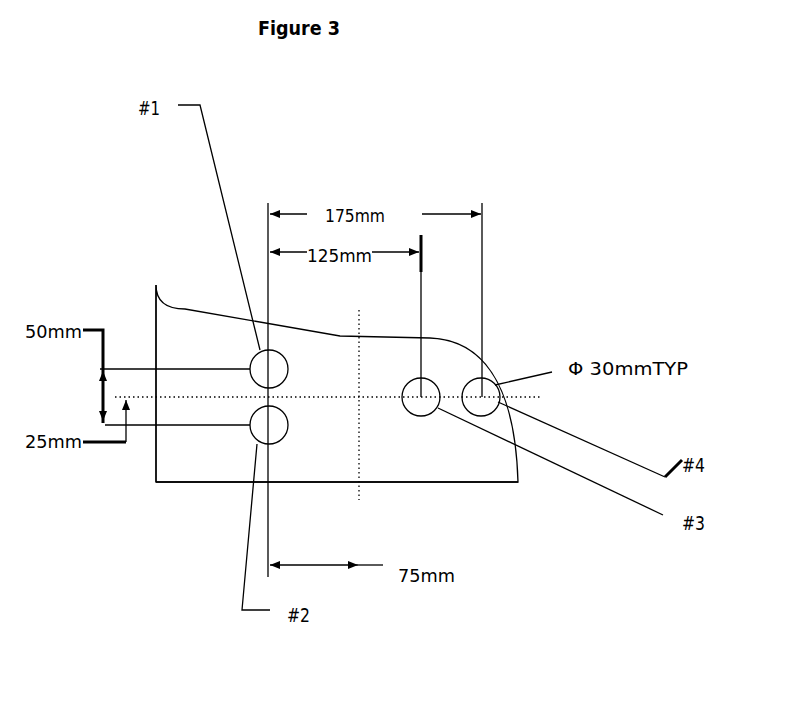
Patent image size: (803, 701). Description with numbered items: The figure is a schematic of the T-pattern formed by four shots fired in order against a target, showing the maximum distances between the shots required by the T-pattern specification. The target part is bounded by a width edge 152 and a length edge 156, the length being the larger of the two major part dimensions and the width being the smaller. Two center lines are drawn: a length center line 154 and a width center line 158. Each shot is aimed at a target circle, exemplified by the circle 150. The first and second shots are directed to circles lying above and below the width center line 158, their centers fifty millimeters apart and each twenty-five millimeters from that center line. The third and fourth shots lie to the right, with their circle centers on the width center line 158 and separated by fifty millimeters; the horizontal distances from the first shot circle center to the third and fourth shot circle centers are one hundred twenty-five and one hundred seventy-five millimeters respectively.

The target circle 150 is at (252, 362).
The width edge 152 is at (154, 312).
The length center line 154 is at (361, 312).
The length edge 156 is at (507, 486).
The width center line 158 is at (201, 400).